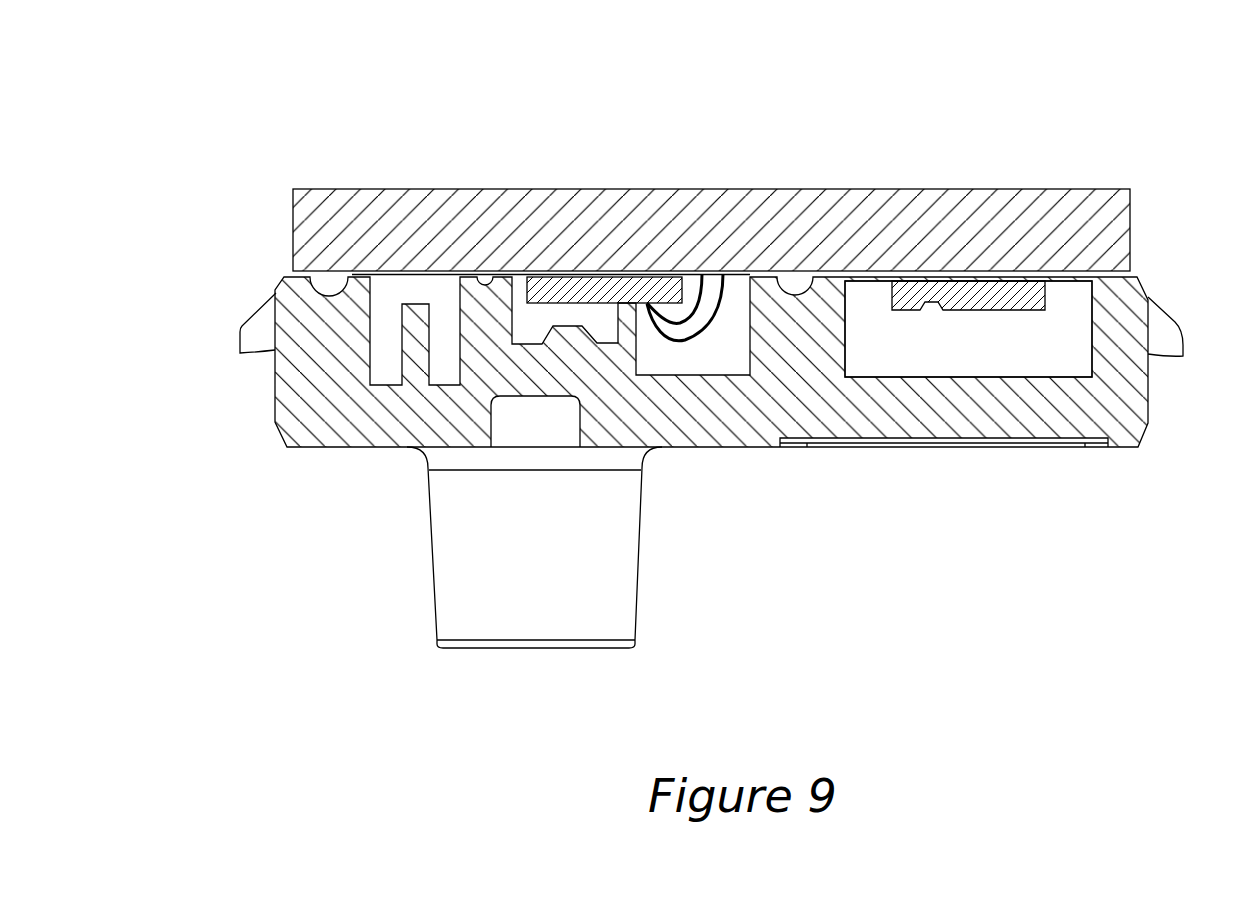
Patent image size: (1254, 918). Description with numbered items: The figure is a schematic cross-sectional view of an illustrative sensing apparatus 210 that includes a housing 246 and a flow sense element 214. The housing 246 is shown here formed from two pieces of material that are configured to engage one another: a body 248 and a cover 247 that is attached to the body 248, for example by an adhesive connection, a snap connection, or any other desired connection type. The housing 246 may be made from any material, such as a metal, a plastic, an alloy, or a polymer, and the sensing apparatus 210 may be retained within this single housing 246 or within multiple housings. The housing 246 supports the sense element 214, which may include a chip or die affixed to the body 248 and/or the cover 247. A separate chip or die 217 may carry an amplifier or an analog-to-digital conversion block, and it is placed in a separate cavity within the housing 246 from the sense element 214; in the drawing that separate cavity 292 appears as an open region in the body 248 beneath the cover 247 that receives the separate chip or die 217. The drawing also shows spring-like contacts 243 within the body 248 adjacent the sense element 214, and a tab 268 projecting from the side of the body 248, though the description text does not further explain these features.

The sensing apparatus 210 is at (698, 360).
The cover 247 is at (412, 200).
The flow sense element 214 is at (606, 286).
The separate chip or die 217 is at (975, 290).
The housing 246 is at (1147, 274).
The body 248 is at (262, 317).
The right latch tab 268 is at (1148, 298).
The cavity 292 is at (1074, 362).
The spring contacts 243 is at (685, 341).